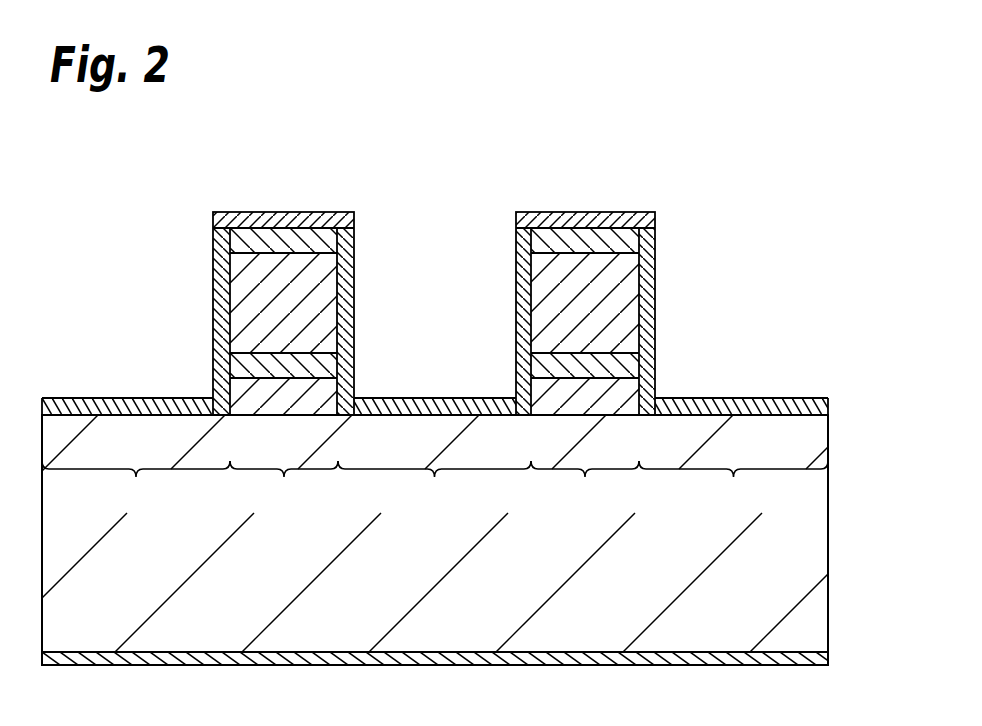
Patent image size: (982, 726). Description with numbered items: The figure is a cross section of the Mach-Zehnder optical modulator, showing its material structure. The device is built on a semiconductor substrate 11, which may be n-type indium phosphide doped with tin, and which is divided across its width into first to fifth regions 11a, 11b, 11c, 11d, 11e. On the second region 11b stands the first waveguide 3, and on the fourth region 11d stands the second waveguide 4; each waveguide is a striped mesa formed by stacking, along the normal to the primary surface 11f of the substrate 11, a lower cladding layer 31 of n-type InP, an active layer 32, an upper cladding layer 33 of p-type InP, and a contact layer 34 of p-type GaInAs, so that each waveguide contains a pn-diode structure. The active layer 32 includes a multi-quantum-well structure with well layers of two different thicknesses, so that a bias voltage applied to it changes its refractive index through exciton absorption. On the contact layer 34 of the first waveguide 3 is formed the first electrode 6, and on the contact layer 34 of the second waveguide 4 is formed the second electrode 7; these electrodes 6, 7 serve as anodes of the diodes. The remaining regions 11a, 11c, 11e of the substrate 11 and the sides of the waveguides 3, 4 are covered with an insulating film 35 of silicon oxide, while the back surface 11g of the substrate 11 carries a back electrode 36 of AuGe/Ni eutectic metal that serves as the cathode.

The first waveguide 3 is at (738, 243).
The second waveguide 4 is at (162, 243).
The first electrode 6 is at (613, 212).
The second electrode 7 is at (308, 212).
The semiconductor substrate 11 is at (818, 535).
The first region 11a is at (733, 486).
The second region 11b is at (585, 486).
The third region 11c is at (434, 486).
The fourth region 11d is at (284, 486).
The fifth region 11e is at (136, 486).
The primary surface 11f is at (808, 398).
The back surface 11g is at (808, 652).
The lower cladding layer 31 is at (326, 393).
The active layer 32 is at (326, 362).
The upper cladding layer 33 is at (326, 298).
The contact layer 34 is at (326, 239).
The insulating film 35 is at (767, 398).
The back electrode 36 is at (826, 658).